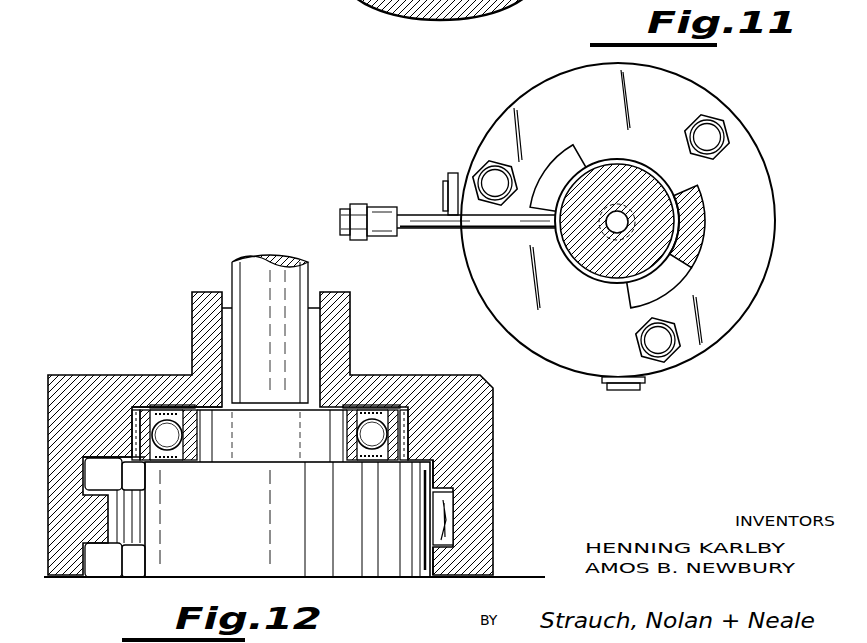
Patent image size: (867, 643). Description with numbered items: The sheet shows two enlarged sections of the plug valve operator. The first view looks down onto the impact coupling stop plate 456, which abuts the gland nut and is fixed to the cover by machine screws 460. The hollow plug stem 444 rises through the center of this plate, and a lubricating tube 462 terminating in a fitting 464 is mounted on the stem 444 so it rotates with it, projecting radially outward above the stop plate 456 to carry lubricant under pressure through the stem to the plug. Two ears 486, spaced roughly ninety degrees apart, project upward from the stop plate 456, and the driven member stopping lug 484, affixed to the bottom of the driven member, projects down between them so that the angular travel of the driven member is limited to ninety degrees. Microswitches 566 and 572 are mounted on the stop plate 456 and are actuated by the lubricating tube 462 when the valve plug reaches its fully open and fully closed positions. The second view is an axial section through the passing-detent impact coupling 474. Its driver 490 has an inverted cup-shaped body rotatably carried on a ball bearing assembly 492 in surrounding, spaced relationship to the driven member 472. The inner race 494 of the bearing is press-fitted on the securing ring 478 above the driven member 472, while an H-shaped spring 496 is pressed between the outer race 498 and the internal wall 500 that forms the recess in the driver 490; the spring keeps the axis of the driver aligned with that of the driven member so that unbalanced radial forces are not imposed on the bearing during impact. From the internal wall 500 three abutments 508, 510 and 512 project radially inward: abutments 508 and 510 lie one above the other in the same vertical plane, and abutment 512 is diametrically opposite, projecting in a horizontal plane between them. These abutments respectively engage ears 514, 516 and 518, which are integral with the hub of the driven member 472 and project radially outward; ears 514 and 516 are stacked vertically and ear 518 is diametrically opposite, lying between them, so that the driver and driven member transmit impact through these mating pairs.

In FIG. 11, the plug stem 444 is at (648, 182).
In FIG. 11, the impact coupling stop plate 456 is at (755, 163).
In FIG. 11, the machine screws 460 is at (725, 128).
In FIG. 11, the lubricating tube 462 is at (413, 213).
In FIG. 11, the fitting 464 is at (355, 205).
In FIG. 11, the driven member stopping lug 484 is at (703, 227).
In FIG. 11, the ears 486 is at (558, 160).
In FIG. 11, the microswitch 566 is at (630, 390).
In FIG. 11, the microswitch 572 is at (453, 173).
In FIG. 12, the driven member 472 is at (390, 578).
In FIG. 12, the impact coupling 474 is at (364, 358).
In FIG. 12, the securing ring 478 is at (243, 450).
In FIG. 12, the driver 490 is at (493, 428).
In FIG. 12, the ball bearing assembly 492 is at (162, 402).
In FIG. 12, the inner race 494 is at (175, 410).
In FIG. 12, the H-shaped spring 496 is at (406, 433).
In FIG. 12, the outer race 498 is at (398, 407).
In FIG. 12, the internal wall 500 is at (105, 472).
In FIG. 12, the abutment 508 is at (450, 473).
In FIG. 12, the abutment 510 is at (450, 565).
In FIG. 12, the abutment 512 is at (95, 527).
In FIG. 12, the ear 514 is at (130, 466).
In FIG. 12, the ear 516 is at (112, 565).
In FIG. 12, the ear 518 is at (450, 515).